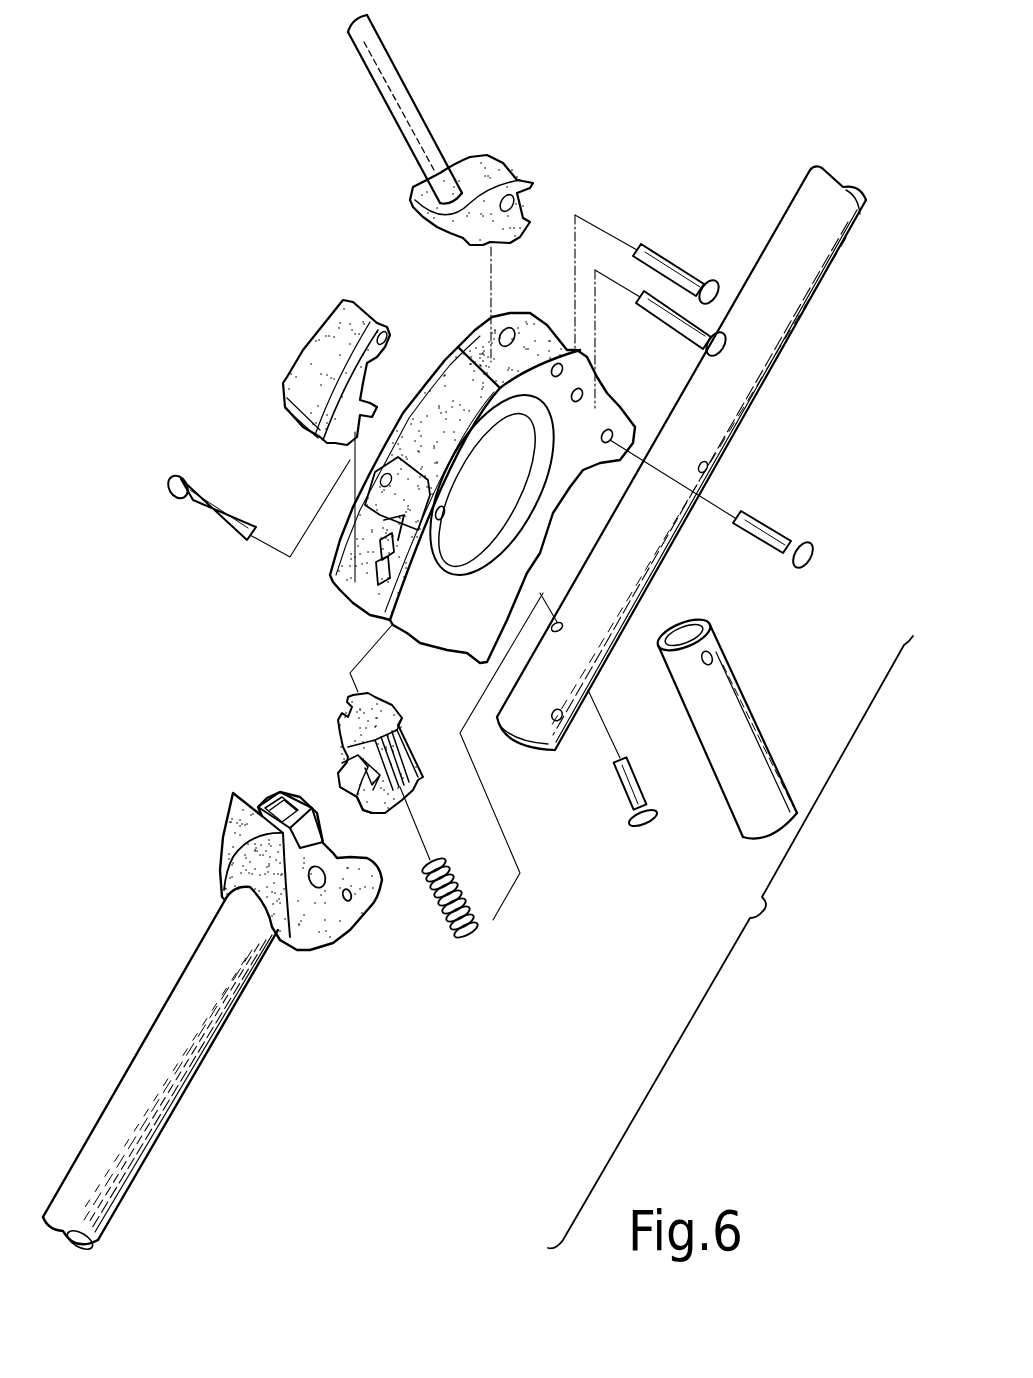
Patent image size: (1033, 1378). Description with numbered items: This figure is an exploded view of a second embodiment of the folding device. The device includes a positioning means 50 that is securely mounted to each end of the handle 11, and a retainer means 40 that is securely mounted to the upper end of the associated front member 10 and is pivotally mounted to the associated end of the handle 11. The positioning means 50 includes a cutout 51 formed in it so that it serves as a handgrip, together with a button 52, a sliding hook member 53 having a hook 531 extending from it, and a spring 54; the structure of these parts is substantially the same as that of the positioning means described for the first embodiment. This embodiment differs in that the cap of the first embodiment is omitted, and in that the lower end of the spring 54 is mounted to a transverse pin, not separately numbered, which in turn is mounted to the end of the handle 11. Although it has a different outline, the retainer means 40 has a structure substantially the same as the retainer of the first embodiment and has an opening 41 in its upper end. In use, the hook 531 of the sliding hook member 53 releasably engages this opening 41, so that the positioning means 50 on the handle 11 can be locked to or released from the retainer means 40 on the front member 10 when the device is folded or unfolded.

The front member 10 is at (210, 1023).
The handle 11 is at (773, 337).
The retainer means 40 is at (233, 813).
The opening 41 is at (290, 813).
The positioning means 50 is at (433, 385).
The cutout 51 is at (493, 452).
The button 52 is at (313, 357).
The sliding hook member 53 is at (345, 738).
The hook 531 is at (377, 813).
The spring 54 is at (433, 900).